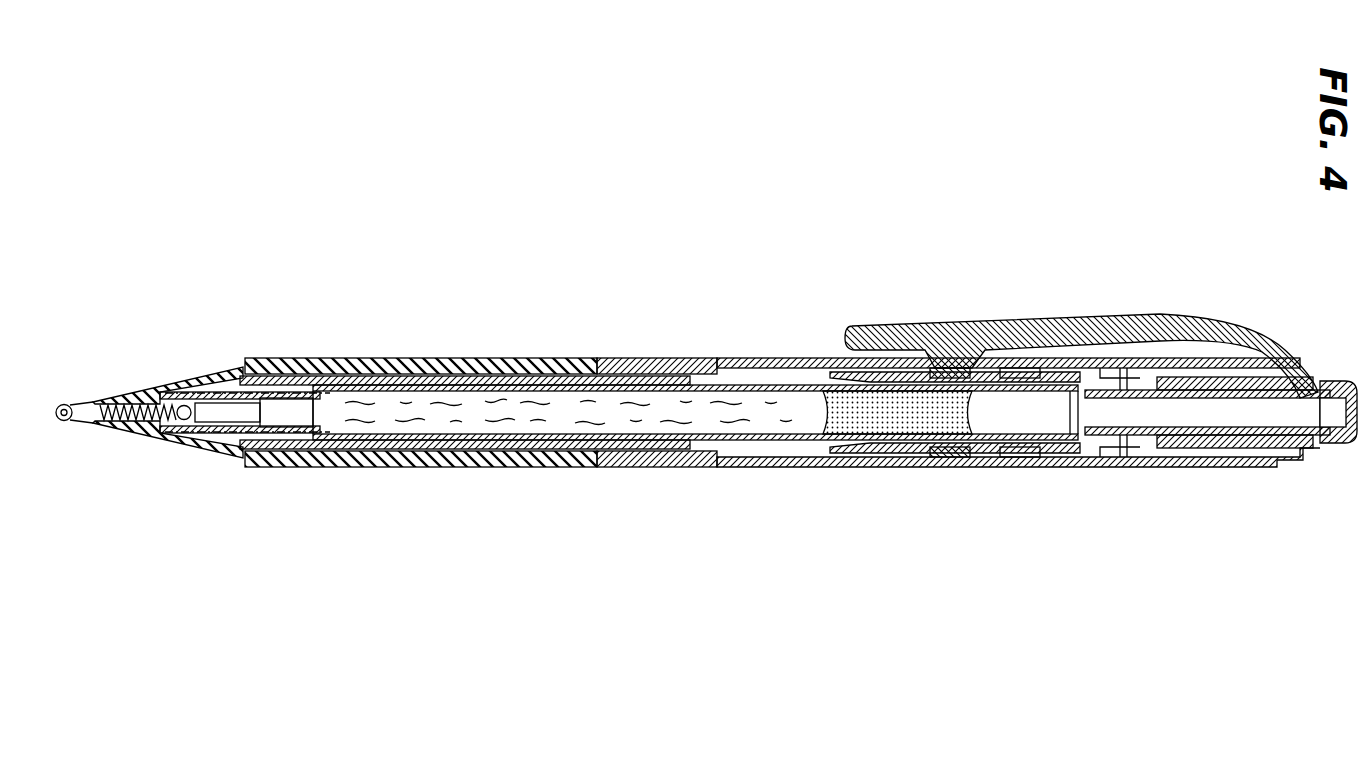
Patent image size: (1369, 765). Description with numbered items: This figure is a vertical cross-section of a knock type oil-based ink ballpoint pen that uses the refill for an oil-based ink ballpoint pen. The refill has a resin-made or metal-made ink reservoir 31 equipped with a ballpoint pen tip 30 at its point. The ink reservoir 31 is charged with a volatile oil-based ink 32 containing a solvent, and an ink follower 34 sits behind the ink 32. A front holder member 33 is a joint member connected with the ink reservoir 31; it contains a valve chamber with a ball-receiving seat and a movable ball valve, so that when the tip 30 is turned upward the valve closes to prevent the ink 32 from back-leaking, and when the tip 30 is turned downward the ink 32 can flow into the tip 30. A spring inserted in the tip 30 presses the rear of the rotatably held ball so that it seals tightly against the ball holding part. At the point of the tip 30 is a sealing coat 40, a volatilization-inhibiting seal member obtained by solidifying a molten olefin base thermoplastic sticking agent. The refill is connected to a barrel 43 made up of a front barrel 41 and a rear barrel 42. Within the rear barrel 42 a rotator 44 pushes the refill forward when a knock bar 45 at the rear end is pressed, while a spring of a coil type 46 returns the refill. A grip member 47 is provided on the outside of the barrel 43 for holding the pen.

The ballpoint pen tip 30 is at (95, 400).
The ink reservoir 31 is at (470, 368).
The volatile oil-based ink 32 is at (356, 400).
The front holder member 33 is at (228, 398).
The ink follower 34 is at (893, 400).
The sealing coat 40 is at (65, 403).
The front barrel 41 is at (593, 360).
The rear barrel 42 is at (784, 358).
The barrel 43 is at (668, 350).
The rotator 44 is at (1112, 380).
The knock bar 45 is at (1337, 382).
The spring of a coil type 46 is at (193, 392).
The grip member 47 is at (512, 470).